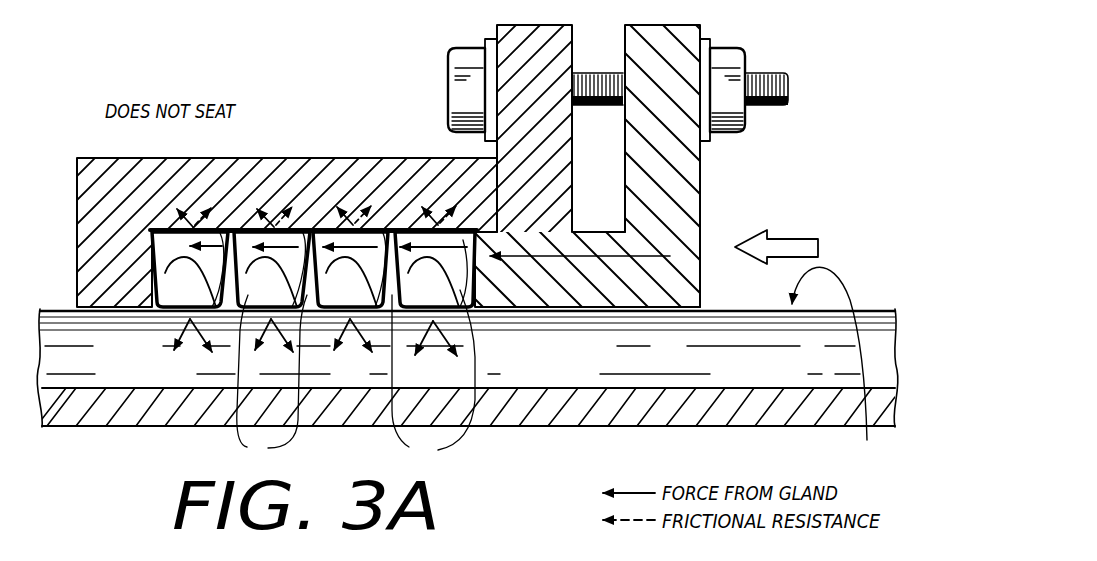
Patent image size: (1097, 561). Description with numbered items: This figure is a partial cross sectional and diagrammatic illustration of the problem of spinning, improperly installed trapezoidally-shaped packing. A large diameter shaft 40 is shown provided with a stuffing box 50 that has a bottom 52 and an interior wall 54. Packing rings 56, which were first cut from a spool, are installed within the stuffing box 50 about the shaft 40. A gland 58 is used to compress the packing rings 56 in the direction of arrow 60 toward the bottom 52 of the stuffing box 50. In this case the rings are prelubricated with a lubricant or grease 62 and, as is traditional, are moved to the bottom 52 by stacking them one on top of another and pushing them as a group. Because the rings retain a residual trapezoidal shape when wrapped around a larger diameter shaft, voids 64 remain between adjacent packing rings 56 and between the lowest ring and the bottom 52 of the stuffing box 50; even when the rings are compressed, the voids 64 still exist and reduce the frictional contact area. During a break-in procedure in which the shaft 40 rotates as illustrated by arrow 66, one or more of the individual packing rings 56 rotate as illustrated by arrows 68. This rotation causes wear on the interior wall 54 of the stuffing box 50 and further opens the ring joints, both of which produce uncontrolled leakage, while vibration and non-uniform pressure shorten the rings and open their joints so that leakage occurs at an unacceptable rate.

The shaft 40 is at (640, 403).
The stuffing box 50 is at (96, 190).
The bottom 52 is at (152, 262).
The interior wall 54 is at (488, 232).
The packing rings 56 is at (194, 300).
The gland 58 is at (703, 185).
The arrow 60 is at (787, 236).
The grease 62 is at (160, 300).
The voids 64 is at (152, 284).
The arrow 66 is at (843, 290).
The arrows 68 is at (223, 232).